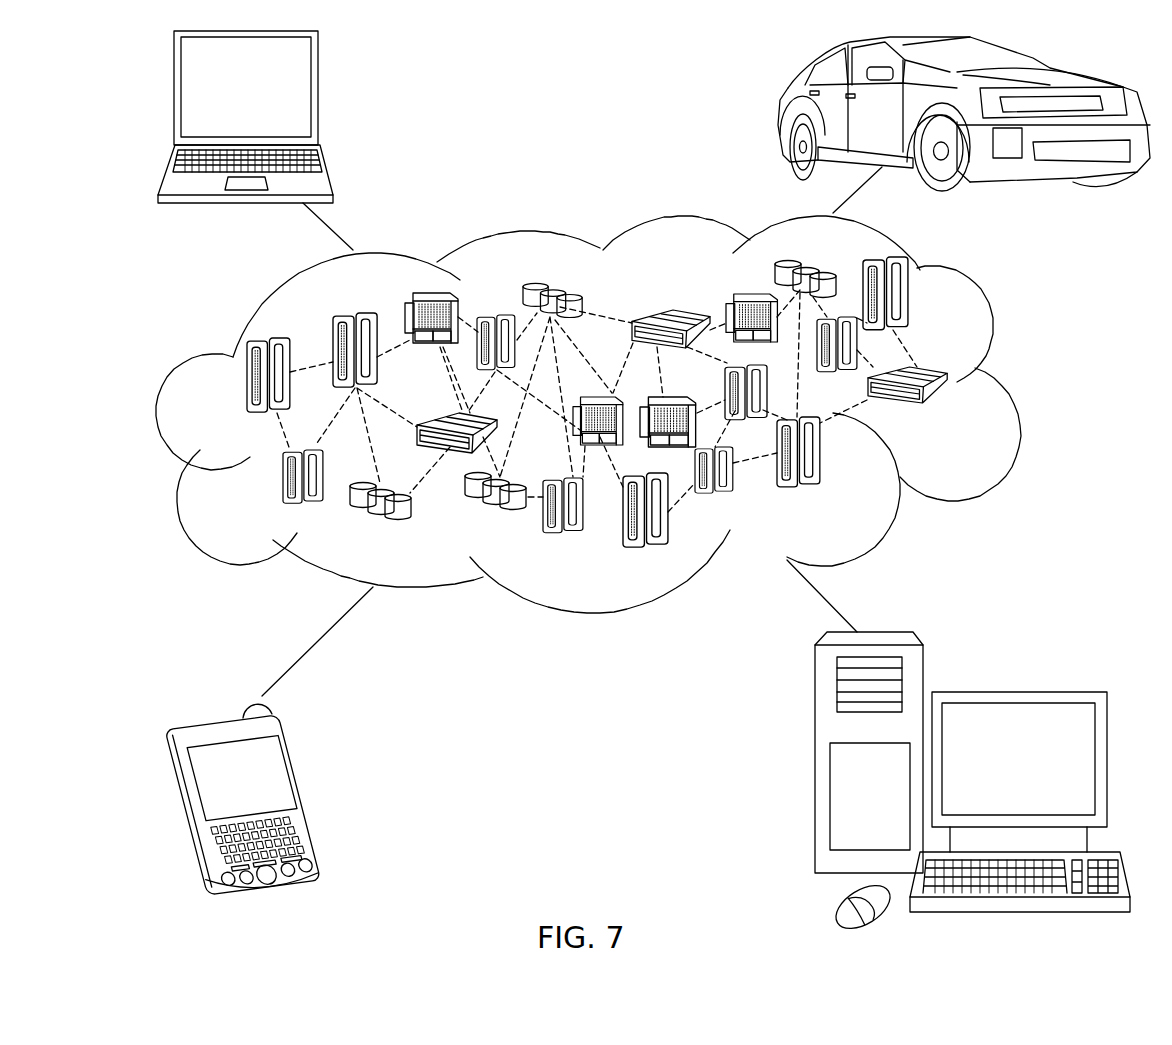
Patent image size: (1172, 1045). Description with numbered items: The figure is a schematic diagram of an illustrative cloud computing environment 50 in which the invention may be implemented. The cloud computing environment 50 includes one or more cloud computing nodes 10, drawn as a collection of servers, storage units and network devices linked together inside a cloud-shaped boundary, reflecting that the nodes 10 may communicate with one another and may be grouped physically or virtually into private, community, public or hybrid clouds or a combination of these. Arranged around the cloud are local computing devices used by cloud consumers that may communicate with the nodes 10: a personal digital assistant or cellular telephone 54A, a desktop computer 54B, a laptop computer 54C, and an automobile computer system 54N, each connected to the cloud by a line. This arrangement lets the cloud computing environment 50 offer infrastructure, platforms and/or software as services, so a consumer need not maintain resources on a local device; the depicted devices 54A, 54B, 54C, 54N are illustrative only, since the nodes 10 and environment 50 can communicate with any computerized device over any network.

The cloud computing node 10 is at (958, 411).
The cloud computing environment 50 is at (1012, 384).
The personal digital assistant or cellular telephone 54A is at (307, 790).
The desktop computer 54B is at (1014, 692).
The laptop computer 54C is at (320, 97).
The automobile computer system 54N is at (784, 114).